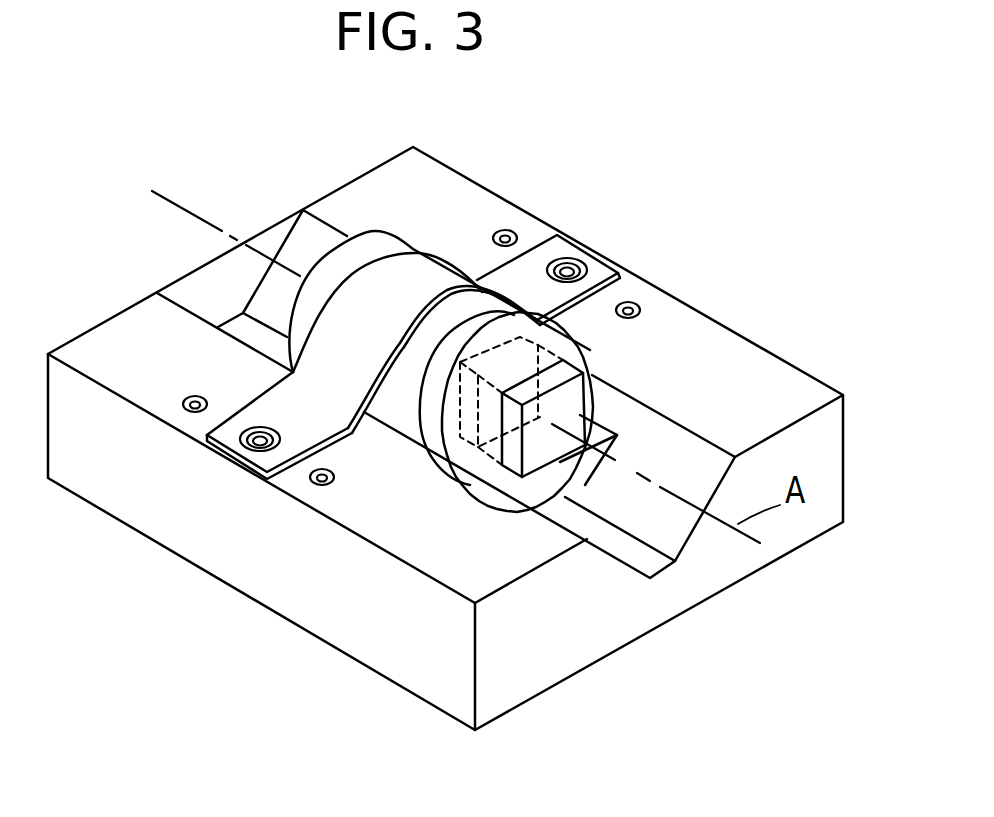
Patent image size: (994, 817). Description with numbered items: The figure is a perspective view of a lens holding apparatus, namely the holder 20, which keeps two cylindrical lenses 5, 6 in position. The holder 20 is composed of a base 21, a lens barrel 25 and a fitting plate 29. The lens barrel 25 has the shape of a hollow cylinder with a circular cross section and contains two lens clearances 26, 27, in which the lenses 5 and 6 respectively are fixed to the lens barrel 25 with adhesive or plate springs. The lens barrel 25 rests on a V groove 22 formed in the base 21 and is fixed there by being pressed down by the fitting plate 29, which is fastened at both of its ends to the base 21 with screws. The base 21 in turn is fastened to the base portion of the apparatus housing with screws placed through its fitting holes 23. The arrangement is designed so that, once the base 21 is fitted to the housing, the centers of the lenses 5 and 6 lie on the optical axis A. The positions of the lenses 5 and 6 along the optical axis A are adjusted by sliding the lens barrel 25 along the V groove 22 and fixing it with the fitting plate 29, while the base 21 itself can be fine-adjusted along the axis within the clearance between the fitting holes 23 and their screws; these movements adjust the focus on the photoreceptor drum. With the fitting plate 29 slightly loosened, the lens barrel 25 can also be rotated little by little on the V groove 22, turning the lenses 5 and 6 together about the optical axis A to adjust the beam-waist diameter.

The cylindrical lens 5 is at (418, 425).
The cylindrical lens 6 is at (595, 372).
The holder 20 is at (500, 140).
The base 21 is at (825, 378).
The V groove 22 is at (664, 450).
The fitting holes 23 is at (513, 230).
The lens barrel 25 is at (371, 230).
The lens clearance 26 is at (433, 462).
The lens clearance 27 is at (497, 474).
The fitting plate 29 is at (410, 270).